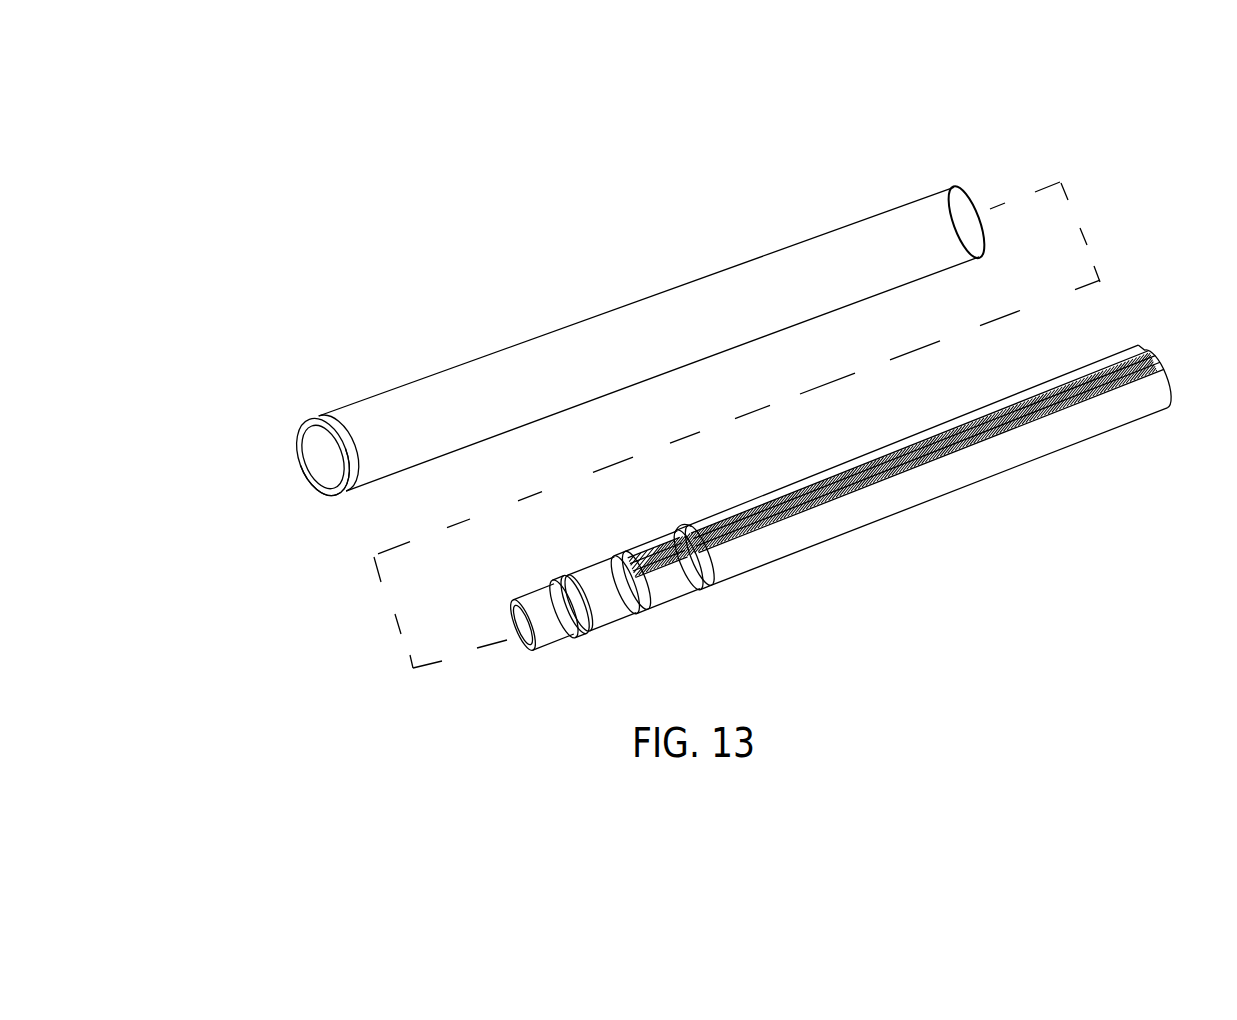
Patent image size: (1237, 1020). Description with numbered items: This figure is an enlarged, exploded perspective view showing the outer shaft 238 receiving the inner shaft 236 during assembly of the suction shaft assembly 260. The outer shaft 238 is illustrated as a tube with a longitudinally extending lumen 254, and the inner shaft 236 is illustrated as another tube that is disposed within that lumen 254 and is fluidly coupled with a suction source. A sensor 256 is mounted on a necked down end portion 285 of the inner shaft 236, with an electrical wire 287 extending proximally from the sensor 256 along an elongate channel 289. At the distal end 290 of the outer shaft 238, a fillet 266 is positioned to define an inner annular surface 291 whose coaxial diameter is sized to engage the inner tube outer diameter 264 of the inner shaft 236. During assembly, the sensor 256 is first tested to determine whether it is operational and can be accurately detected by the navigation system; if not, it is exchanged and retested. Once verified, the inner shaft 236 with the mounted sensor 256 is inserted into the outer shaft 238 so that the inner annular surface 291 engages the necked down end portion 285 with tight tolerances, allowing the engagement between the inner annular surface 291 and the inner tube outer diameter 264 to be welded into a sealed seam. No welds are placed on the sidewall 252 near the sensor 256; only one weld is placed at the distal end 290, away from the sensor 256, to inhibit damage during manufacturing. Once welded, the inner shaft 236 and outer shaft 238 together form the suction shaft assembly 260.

The inner shaft 236 is at (683, 604).
The outer shaft 238 is at (617, 300).
The sidewall 252 is at (961, 193).
The lumen 254 is at (1159, 378).
The sensor 256 is at (604, 643).
The suction shaft assembly 260 is at (525, 162).
The inner tube outer diameter 264 is at (520, 603).
The fillet 266 is at (293, 432).
The necked down end portion 285 is at (673, 540).
The electrical wire 287 is at (653, 560).
The elongate channel 289 is at (787, 518).
The distal end 290 is at (288, 480).
The inner annular surface 291 is at (311, 430).